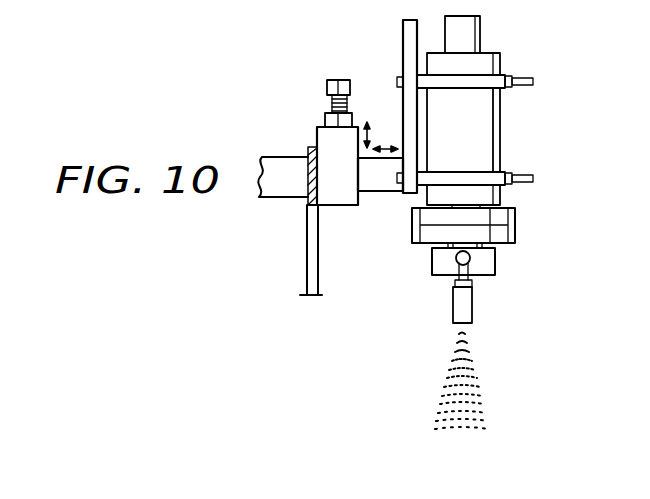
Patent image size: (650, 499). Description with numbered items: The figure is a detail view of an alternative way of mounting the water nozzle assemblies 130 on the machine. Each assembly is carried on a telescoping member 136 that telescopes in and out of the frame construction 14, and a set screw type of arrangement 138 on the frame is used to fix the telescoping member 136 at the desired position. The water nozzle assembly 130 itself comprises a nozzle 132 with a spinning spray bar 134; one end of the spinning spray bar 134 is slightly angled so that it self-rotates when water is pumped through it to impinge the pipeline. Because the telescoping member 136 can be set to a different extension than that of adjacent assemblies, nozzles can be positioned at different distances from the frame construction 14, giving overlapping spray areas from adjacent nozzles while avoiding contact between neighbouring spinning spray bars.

The frame construction 14 is at (282, 197).
The water nozzle assemblies 130 is at (523, 50).
The nozzle 132 is at (495, 128).
The spinning spray bar 134 is at (472, 277).
The telescoping member 136 is at (383, 191).
The set screw type of arrangement 138 is at (323, 117).